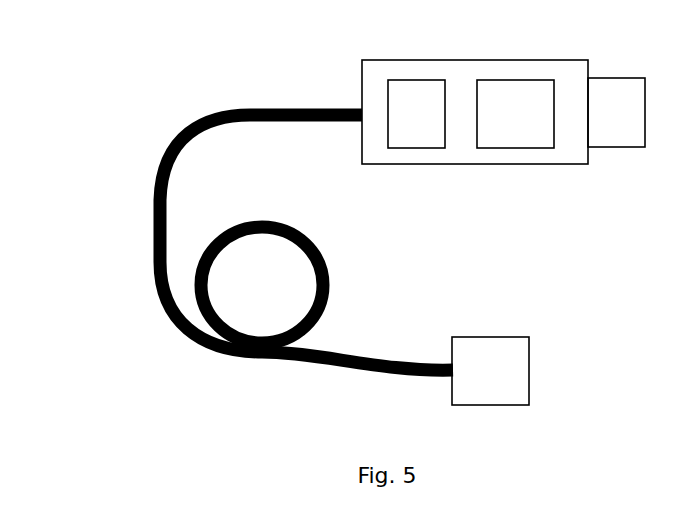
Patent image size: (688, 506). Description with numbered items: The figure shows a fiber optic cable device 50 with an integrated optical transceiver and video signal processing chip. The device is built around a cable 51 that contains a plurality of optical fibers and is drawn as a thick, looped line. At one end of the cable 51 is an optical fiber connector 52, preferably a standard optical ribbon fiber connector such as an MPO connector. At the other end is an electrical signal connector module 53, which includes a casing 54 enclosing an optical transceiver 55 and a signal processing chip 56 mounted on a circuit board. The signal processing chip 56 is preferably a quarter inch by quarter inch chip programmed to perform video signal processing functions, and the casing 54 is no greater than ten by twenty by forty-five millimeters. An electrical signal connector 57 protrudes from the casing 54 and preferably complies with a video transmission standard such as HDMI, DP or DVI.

The fiber optic cable device 50 is at (84, 109).
The cable 51 is at (152, 223).
The optical fiber connector 52 is at (485, 338).
The electrical signal connector module 53 is at (645, 180).
The casing 54 is at (383, 58).
The optical transceiver 55 is at (428, 97).
The signal processing chip 56 is at (517, 95).
The electrical signal connector 57 is at (619, 95).